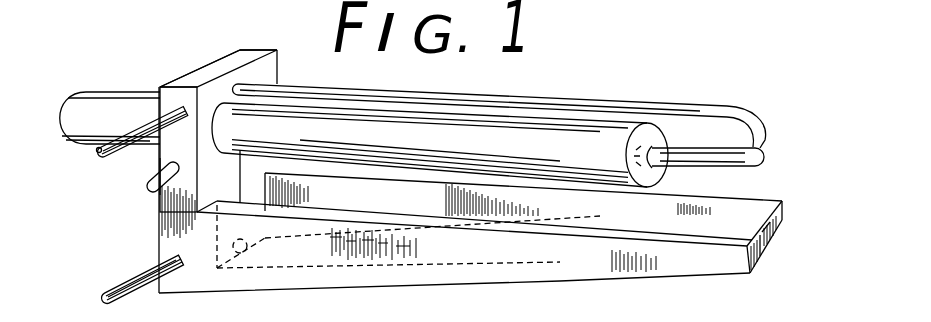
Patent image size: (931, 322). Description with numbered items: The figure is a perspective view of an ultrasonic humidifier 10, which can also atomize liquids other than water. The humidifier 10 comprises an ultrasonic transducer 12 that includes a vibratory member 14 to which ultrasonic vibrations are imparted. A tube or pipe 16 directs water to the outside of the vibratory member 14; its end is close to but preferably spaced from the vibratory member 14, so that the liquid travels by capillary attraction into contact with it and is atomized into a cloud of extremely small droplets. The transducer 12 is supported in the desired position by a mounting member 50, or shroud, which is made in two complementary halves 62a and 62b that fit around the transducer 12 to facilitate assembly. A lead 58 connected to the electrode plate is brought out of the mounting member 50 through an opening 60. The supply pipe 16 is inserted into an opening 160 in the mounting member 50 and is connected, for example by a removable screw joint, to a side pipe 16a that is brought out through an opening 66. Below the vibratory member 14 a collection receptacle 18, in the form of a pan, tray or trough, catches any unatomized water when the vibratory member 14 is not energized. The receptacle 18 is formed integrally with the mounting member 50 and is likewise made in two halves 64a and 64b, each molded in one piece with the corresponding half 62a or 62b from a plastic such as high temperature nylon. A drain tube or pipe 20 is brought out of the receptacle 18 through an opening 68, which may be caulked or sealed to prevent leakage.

The ultrasonic humidifier 10 is at (682, 54).
The ultrasonic transducer 12 is at (388, 118).
The vibratory member 14 is at (767, 158).
The tube or pipe 16 is at (744, 116).
The side pipe 16a is at (108, 162).
The opening 160 is at (242, 82).
The collection receptacle 18 is at (694, 262).
The drain tube or pipe 20 is at (110, 279).
The mounting member 50 is at (162, 82).
The lead 58 is at (150, 192).
The opening 60 is at (148, 163).
The half of the mounting member 62a is at (237, 55).
The half of the mounting member 62b is at (187, 73).
The half of the collecting receptacle 64a is at (777, 231).
The half of the collecting receptacle 64b is at (760, 257).
The opening 66 is at (156, 110).
The opening 68 is at (160, 258).